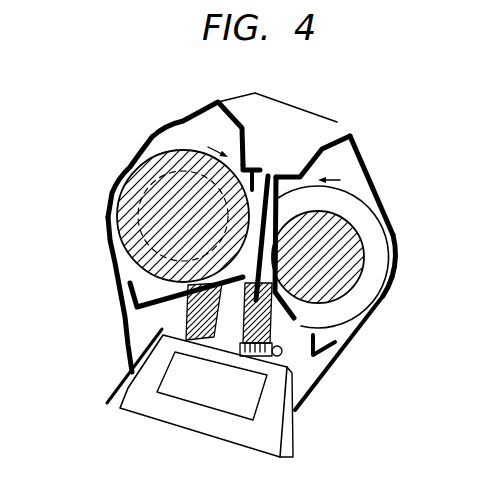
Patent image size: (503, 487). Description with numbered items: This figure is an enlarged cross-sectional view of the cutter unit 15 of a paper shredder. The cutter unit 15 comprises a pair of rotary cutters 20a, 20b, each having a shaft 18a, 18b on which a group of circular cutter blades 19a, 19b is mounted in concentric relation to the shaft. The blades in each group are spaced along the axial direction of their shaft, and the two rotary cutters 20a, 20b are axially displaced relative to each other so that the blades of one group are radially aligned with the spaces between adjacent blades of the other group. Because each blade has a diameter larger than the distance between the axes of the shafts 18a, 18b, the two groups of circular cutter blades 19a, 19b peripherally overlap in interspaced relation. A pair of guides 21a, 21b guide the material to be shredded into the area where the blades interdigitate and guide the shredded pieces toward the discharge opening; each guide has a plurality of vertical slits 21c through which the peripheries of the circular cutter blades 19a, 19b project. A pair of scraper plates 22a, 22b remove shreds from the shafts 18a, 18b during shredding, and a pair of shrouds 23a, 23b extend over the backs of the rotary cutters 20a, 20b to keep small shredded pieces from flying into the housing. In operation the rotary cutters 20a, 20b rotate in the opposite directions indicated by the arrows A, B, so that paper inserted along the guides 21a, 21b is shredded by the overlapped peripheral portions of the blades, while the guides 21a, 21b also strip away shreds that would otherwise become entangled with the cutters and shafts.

The cutter unit 15 is at (396, 190).
The shaft 18a is at (170, 182).
The shaft 18b is at (365, 241).
The circular cutter blades 19a is at (115, 262).
The circular cutter blades 19b is at (375, 303).
The rotary cutter 20a is at (108, 236).
The rotary cutter 20b is at (393, 279).
The guide 21a is at (250, 163).
The guide 21b is at (318, 160).
The vertical slits 21c is at (268, 174).
The scraper plate 22a is at (146, 333).
The scraper plate 22b is at (330, 367).
The shroud 23a is at (117, 183).
The shroud 23b is at (388, 222).
The arrow A is at (214, 140).
The arrow B is at (333, 178).